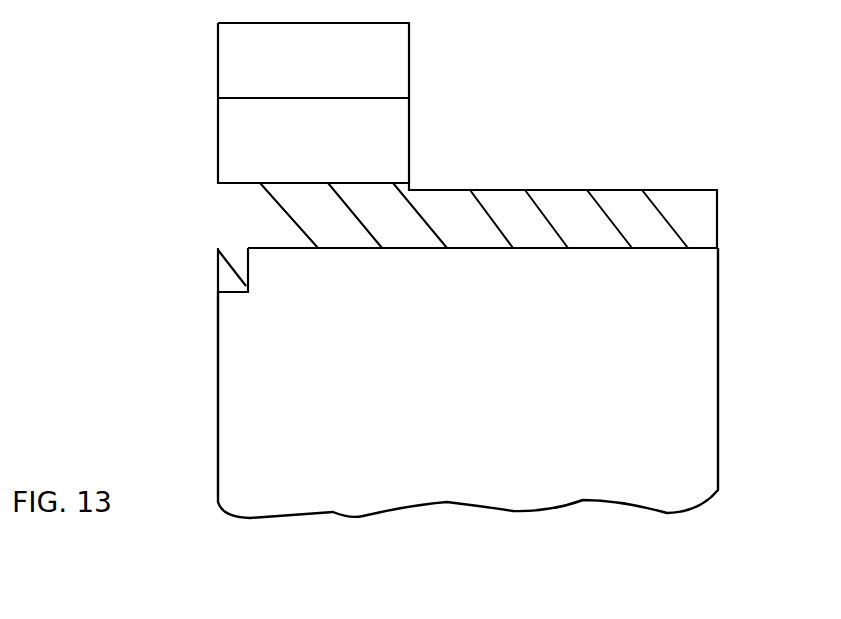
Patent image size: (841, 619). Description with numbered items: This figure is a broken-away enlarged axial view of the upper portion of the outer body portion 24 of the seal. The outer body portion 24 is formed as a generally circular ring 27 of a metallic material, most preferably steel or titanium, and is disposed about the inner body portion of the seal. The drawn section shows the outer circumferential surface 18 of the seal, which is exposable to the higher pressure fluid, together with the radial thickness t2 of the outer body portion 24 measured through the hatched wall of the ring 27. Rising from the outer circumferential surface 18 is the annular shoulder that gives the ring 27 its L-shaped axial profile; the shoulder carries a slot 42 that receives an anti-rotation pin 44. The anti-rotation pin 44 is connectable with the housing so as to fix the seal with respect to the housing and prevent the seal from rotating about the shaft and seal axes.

The outer annular body portion 24 is at (135, 180).
The slot 42 is at (410, 53).
The anti-rotation pin 44 is at (367, 181).
The outer circumferential surface 18 is at (556, 190).
The circular ring 27 is at (472, 232).
The radial thickness of the outer body portion t2 is at (622, 190).